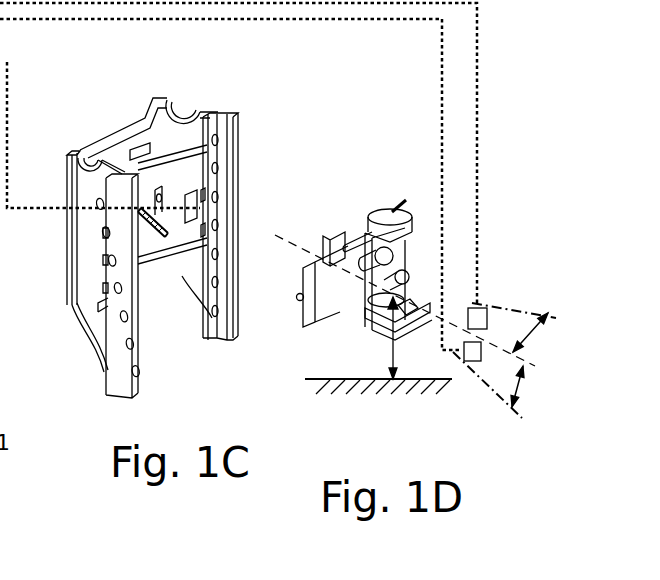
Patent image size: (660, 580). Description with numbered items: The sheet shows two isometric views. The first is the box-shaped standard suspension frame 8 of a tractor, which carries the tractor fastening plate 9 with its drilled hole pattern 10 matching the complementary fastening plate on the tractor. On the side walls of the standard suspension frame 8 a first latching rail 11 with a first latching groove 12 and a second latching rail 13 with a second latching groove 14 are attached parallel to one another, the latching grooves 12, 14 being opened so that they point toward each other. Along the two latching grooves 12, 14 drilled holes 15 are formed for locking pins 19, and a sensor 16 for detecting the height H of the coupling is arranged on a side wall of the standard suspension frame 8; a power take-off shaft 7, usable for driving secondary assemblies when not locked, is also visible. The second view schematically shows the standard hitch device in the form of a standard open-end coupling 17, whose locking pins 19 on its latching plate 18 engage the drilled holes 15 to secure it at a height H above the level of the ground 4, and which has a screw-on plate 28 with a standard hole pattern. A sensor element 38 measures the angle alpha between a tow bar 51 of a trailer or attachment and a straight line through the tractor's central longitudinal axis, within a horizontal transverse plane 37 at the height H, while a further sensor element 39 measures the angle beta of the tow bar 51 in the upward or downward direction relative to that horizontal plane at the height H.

In FIG. 1D, the ground 4 is at (320, 379).
In FIG. 1C, the power take-off shaft 7 is at (165, 240).
In FIG. 1C, the standard suspension frame 8 is at (165, 357).
In FIG. 1C, the tractor fastening plate 9 is at (132, 128).
In FIG. 1C, the drilled hole pattern 10 is at (87, 155).
In FIG. 1C, the first latching rail 11 is at (233, 238).
In FIG. 1C, the first latching groove 12 is at (215, 113).
In FIG. 1C, the second latching rail 13 is at (117, 385).
In FIG. 1C, the second latching groove 14 is at (125, 172).
In FIG. 1C, the drilled holes 15 is at (104, 232).
In FIG. 1C, the sensor 16 is at (203, 212).
In FIG. 1D, the standard open-end coupling 17 is at (408, 213).
In FIG. 1D, the latching plate 18 is at (337, 330).
In FIG. 1D, the locking pins 19 is at (303, 300).
In FIG. 1D, the screw-on plate 28 is at (298, 283).
In FIG. 1D, the horizontal transverse plane 37 is at (290, 235).
In FIG. 1D, the sensor element 38 is at (490, 316).
In FIG. 1D, the further sensor element 39 is at (474, 362).
In FIG. 1D, the tow bar 51 is at (546, 310).
In FIG. 1D, the height H is at (396, 353).